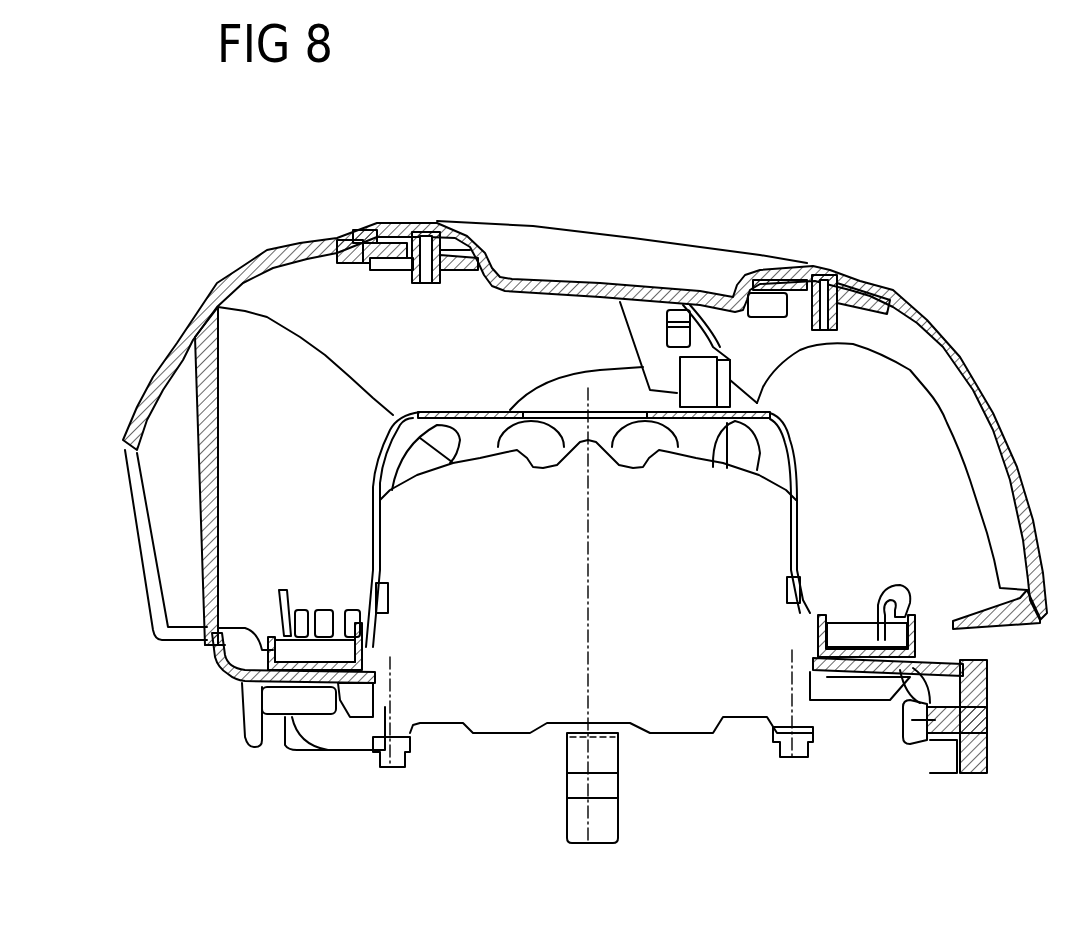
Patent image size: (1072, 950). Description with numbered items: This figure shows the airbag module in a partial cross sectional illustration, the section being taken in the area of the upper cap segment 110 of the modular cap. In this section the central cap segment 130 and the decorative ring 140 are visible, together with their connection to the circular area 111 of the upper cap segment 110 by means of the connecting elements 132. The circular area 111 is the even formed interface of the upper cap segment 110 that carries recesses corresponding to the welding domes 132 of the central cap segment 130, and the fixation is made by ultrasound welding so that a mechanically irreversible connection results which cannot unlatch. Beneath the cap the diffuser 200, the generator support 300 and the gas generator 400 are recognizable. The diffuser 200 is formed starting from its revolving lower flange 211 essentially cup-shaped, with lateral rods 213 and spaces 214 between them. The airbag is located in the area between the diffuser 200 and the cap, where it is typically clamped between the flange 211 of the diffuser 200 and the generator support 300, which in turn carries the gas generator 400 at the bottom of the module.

The upper segment 110 is at (227, 268).
The circular area 111 is at (775, 280).
The central cap segment 130 is at (473, 243).
The welding domes 132 is at (440, 283).
The decorative ring 140 is at (360, 230).
The diffuser 200 is at (467, 412).
The lower flange 211 is at (860, 653).
The lateral rods 213 is at (383, 487).
The spaces 214 is at (440, 437).
The generator support 300 is at (222, 671).
The gas generator 400 is at (510, 720).